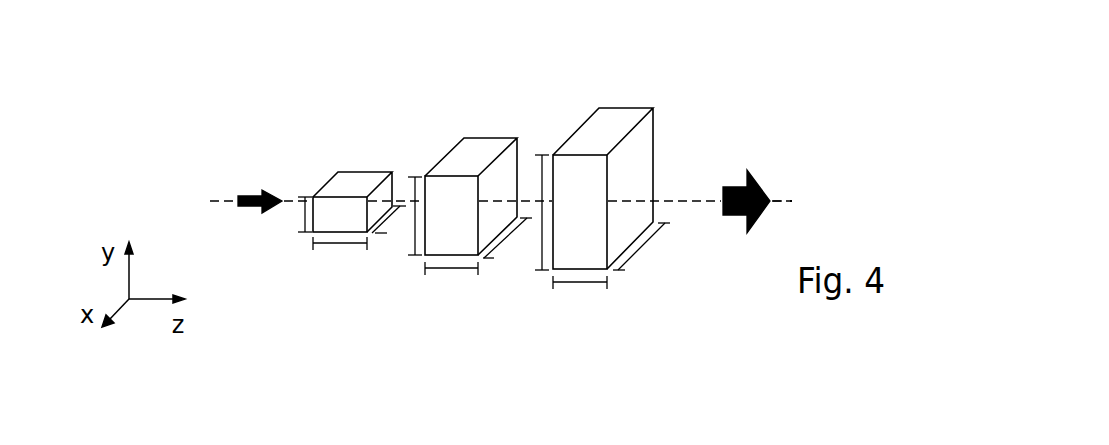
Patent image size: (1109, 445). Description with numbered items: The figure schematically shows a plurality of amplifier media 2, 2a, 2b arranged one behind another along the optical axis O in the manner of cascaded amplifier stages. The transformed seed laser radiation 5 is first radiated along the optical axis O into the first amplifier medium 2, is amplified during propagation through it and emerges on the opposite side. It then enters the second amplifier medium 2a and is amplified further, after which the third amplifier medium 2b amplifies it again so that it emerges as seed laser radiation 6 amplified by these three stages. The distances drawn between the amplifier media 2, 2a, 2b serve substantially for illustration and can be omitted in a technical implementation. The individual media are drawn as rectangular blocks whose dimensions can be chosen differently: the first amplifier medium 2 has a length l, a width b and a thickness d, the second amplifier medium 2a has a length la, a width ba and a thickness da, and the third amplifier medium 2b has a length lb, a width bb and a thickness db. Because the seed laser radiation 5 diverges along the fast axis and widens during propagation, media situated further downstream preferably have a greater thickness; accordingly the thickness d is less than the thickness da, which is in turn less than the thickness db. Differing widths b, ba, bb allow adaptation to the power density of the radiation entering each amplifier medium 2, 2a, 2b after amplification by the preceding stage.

The amplifier medium 2 is at (352, 184).
The second amplifier medium 2a is at (473, 159).
The third amplifier medium 2b is at (613, 128).
The seed laser radiation 5 is at (253, 197).
The amplified seed laser radiation 6 is at (735, 187).
The optical axis O is at (784, 197).
The thickness d is at (304, 214).
The length l is at (340, 258).
The width b is at (397, 214).
The thickness of second amplifier medium da is at (414, 240).
The length of second amplifier medium la is at (451, 287).
The width of second amplifier medium ba is at (507, 240).
The thickness of third amplifier medium db is at (542, 249).
The length of third amplifier medium lb is at (580, 300).
The width of third amplifier medium bb is at (647, 251).